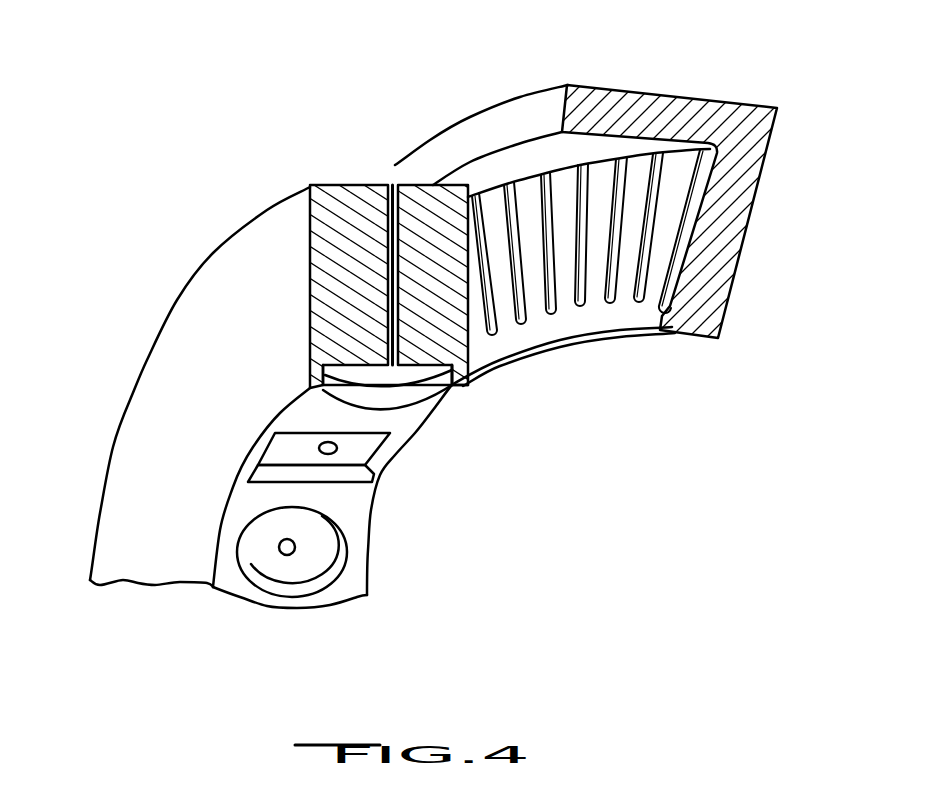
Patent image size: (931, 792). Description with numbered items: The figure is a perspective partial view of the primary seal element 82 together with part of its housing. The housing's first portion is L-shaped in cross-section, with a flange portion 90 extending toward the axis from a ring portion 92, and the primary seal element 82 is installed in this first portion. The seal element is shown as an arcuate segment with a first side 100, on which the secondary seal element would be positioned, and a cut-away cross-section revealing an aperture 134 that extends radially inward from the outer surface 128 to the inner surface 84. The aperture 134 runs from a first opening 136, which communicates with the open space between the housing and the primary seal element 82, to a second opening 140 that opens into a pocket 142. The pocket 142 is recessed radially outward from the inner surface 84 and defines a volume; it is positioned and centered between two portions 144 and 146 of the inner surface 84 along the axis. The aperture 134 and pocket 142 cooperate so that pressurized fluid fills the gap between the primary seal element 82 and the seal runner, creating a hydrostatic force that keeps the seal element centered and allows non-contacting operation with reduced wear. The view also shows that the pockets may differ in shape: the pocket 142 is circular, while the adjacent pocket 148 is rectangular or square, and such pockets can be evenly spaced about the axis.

The primary seal element 82 is at (283, 182).
The inner surface 84 is at (390, 367).
The flange portion 90 is at (728, 217).
The ring portion 92 is at (653, 115).
The first side 100 is at (213, 345).
The outer surface 128 is at (325, 183).
The aperture 134 is at (383, 188).
The first opening 136 is at (397, 185).
The second opening 140 is at (402, 420).
The pocket 142 is at (355, 395).
The portion of radially-inward surface 144 is at (325, 393).
The portion of radially-inward surface 146 is at (457, 387).
The adjacent pocket 148 is at (288, 460).